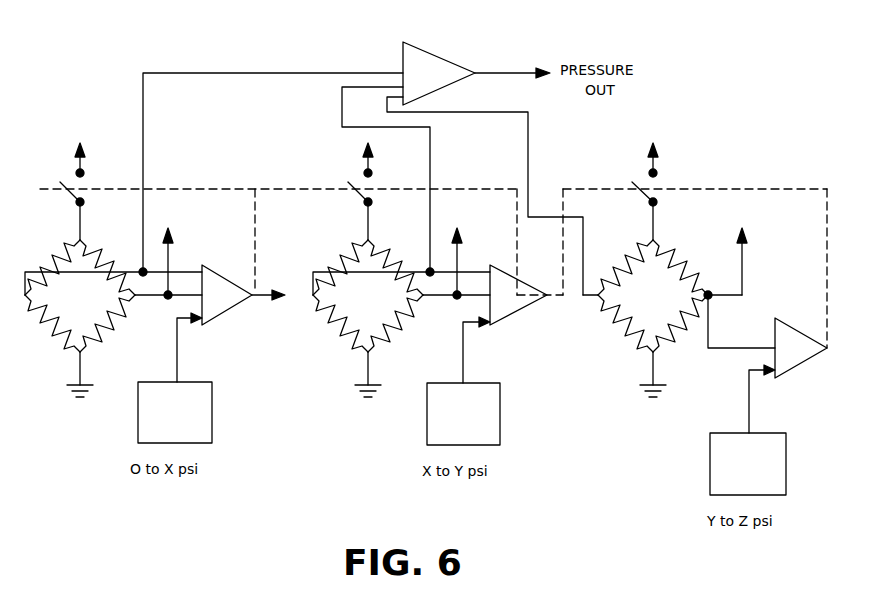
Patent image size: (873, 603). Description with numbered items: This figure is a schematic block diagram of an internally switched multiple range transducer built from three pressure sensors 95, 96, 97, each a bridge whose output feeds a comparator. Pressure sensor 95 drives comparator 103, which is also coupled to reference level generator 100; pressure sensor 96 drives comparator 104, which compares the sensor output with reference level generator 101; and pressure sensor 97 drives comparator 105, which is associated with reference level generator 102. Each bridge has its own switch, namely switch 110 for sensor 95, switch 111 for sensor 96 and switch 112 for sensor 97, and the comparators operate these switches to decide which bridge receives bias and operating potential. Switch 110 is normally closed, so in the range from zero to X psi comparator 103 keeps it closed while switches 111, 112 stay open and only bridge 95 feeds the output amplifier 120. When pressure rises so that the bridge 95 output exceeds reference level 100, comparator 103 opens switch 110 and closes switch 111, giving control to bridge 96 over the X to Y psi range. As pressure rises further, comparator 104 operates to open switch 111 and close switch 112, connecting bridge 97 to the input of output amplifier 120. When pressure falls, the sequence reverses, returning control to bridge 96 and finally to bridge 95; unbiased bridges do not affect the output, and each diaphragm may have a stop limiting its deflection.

The pressure sensor 95 is at (33, 351).
The pressure sensor 96 is at (320, 351).
The pressure sensor 97 is at (602, 354).
The reference level generator 100 is at (213, 417).
The reference level generator 101 is at (503, 418).
The reference level generator 102 is at (788, 470).
The comparator 103 is at (218, 268).
The comparator 104 is at (525, 287).
The comparator 105 is at (785, 325).
The switch 110 is at (85, 186).
The switch 111 is at (373, 186).
The switch 112 is at (660, 186).
The output amplifier 120 is at (440, 53).